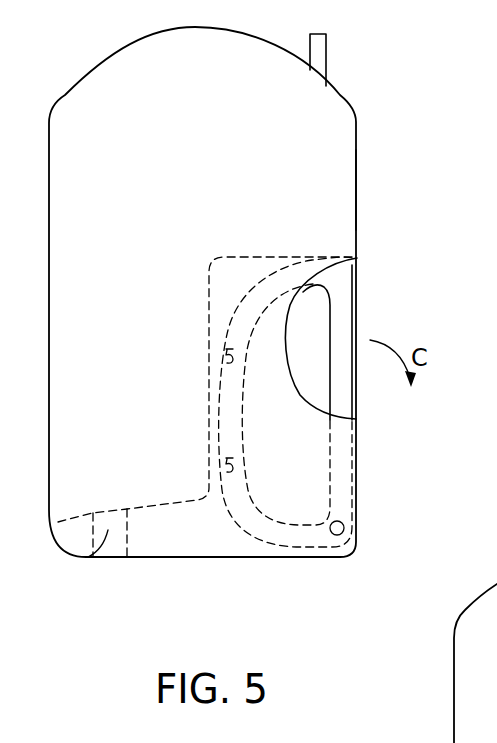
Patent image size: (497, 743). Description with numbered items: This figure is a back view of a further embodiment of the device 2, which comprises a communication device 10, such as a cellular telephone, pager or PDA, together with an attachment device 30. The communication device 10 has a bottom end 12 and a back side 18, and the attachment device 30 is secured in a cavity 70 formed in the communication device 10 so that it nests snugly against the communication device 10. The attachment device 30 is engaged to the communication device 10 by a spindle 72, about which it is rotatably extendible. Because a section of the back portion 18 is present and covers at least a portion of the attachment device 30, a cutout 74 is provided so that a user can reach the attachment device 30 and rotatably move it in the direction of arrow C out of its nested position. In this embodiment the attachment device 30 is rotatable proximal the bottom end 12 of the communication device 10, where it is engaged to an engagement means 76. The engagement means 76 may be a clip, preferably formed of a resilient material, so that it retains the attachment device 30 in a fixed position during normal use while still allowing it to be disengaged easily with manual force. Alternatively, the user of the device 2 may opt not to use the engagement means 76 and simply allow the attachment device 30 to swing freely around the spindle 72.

The device 2 is at (26, 303).
The communication device 10 is at (326, 110).
The bottom end 12 is at (140, 557).
The back side 18 is at (302, 186).
The attachment device 30 is at (335, 263).
The cavity 70 is at (240, 542).
The spindle 72 is at (341, 536).
The cutout 74 is at (307, 367).
The engagement means 76 is at (83, 558).